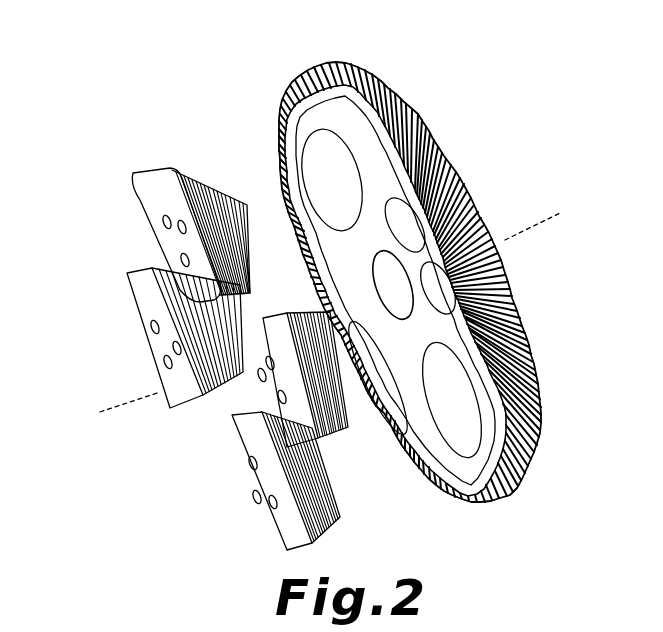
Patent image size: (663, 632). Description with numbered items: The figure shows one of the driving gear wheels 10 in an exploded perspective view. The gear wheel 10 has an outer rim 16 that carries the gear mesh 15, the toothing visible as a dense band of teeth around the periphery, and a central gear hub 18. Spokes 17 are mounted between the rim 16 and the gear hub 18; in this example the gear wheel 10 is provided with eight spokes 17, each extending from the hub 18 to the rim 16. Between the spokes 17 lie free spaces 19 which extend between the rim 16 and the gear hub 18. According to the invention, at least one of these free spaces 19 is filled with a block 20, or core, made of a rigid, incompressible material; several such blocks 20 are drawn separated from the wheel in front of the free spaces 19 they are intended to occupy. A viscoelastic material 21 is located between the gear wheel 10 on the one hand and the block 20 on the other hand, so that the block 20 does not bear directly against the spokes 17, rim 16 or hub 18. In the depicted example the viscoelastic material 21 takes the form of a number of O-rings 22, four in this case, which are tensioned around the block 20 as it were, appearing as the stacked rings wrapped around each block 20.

The driving gear wheel 10 is at (338, 64).
The gear mesh 15 is at (538, 427).
The rim 16 is at (460, 486).
The spokes 17 is at (303, 176).
The gear hub 18 is at (404, 370).
The free spaces 19 is at (441, 160).
The block 20 is at (150, 360).
The viscoelastic material 21 is at (220, 172).
The O-rings 22 is at (185, 172).